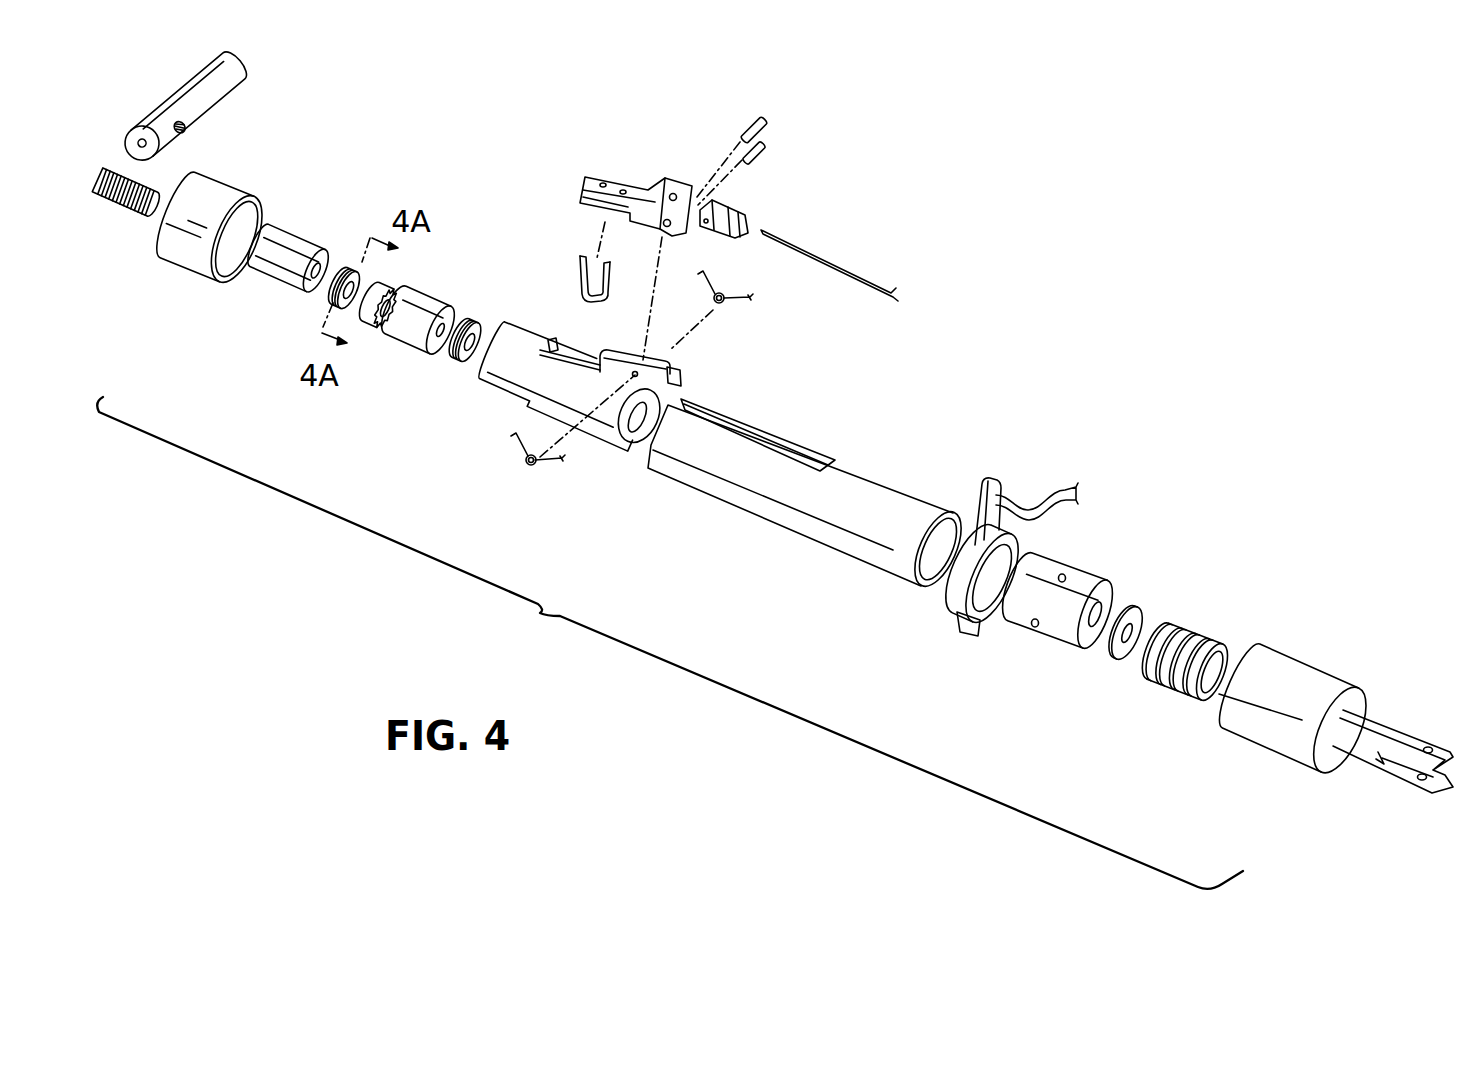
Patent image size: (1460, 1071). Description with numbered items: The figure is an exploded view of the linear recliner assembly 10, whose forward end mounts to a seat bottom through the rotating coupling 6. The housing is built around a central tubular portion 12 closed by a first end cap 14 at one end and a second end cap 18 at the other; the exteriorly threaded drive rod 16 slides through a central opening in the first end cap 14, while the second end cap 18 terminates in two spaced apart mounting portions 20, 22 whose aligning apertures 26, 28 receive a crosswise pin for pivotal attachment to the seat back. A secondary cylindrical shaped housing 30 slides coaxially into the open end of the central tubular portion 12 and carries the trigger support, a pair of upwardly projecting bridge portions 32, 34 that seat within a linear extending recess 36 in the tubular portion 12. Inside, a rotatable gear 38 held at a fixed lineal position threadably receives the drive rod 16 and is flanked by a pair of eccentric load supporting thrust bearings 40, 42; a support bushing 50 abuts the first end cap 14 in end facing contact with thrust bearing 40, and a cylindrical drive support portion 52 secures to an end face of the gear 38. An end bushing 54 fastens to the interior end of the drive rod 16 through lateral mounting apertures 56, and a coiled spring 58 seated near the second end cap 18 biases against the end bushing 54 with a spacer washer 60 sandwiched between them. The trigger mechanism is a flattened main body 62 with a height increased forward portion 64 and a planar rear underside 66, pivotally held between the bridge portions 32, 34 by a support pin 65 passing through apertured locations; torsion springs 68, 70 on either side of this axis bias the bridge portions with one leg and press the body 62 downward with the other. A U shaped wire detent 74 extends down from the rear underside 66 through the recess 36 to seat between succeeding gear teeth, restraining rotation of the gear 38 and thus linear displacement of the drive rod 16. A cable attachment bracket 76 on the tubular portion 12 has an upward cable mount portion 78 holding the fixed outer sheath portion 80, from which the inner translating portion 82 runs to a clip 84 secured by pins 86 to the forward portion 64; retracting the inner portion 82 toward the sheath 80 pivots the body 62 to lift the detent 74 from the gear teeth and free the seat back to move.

The rotating coupling 6 is at (185, 93).
The linear recliner assembly 10 is at (670, 643).
The central tubular portion 12 is at (742, 493).
The first end cap 14 is at (208, 193).
The drive rod 16 is at (123, 203).
The second end cap 18 is at (1275, 667).
The mounting portion 20 is at (1402, 743).
The mounting portion 22 is at (1387, 777).
The aperture 26 is at (1428, 748).
The aperture 28 is at (1420, 780).
The secondary cylindrical shaped housing 30 is at (492, 380).
The bridge portion 32 is at (672, 363).
The bridge portion 34 is at (682, 380).
The linear extending recess 36 is at (797, 445).
The rotatable gear 38 is at (372, 333).
The thrust bearing 40 is at (328, 293).
The thrust bearing 42 is at (455, 358).
The support bushing 50 is at (290, 248).
The drive support portion 52 is at (422, 310).
The end bushing 54 is at (1080, 592).
The mounting apertures 56 is at (1063, 577).
The coiled spring 58 is at (1155, 680).
The spacer washer 60 is at (1137, 610).
The main body 62 is at (603, 193).
The forward portion 64 is at (680, 182).
The support pin 65 is at (757, 155).
The rear underside 66 is at (587, 210).
The torsion spring 68 is at (533, 470).
The torsion spring 70 is at (740, 300).
The detent 74 is at (575, 282).
The cable attachment bracket 76 is at (947, 590).
The cable mount portion 78 is at (992, 482).
The outer sheath portion 80 is at (1067, 492).
The inner translating portion 82 is at (860, 268).
The clip 84 is at (720, 237).
The pins 86 is at (757, 123).